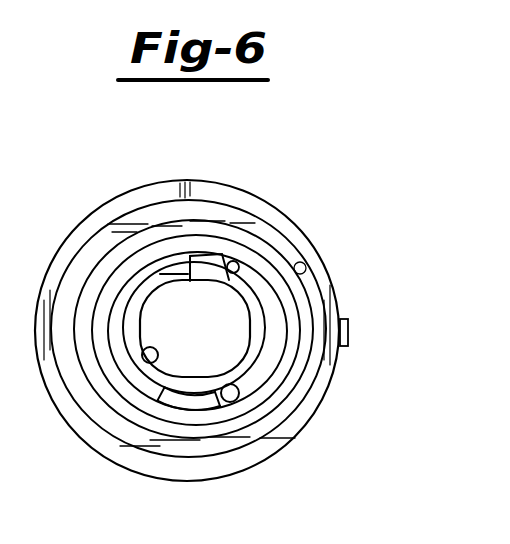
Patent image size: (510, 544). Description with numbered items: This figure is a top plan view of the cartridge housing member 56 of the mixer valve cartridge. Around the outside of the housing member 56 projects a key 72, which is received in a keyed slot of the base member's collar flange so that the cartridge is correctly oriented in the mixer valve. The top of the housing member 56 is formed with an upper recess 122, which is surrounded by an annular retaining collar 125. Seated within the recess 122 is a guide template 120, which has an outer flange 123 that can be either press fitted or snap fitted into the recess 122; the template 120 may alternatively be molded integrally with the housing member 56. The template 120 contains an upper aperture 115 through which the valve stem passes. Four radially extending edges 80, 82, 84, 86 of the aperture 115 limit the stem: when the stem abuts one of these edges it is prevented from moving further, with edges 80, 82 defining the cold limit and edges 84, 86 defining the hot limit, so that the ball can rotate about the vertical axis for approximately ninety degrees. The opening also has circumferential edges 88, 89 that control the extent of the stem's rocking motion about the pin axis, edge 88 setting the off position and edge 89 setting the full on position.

The cartridge housing member 56 is at (191, 165).
The key 72 is at (349, 333).
The radially extending edge 80 is at (172, 378).
The radially extending edge 82 is at (205, 278).
The radially extending edge 84 is at (247, 262).
The radially extending edge 86 is at (242, 392).
The circumferential edge 88 is at (262, 333).
The circumferential edge 89 is at (152, 364).
The upper aperture 115 is at (211, 349).
The guide template 120 is at (290, 212).
The upper recess 122 is at (308, 260).
The outer flange 123 is at (115, 228).
The annular retaining collar 125 is at (147, 190).